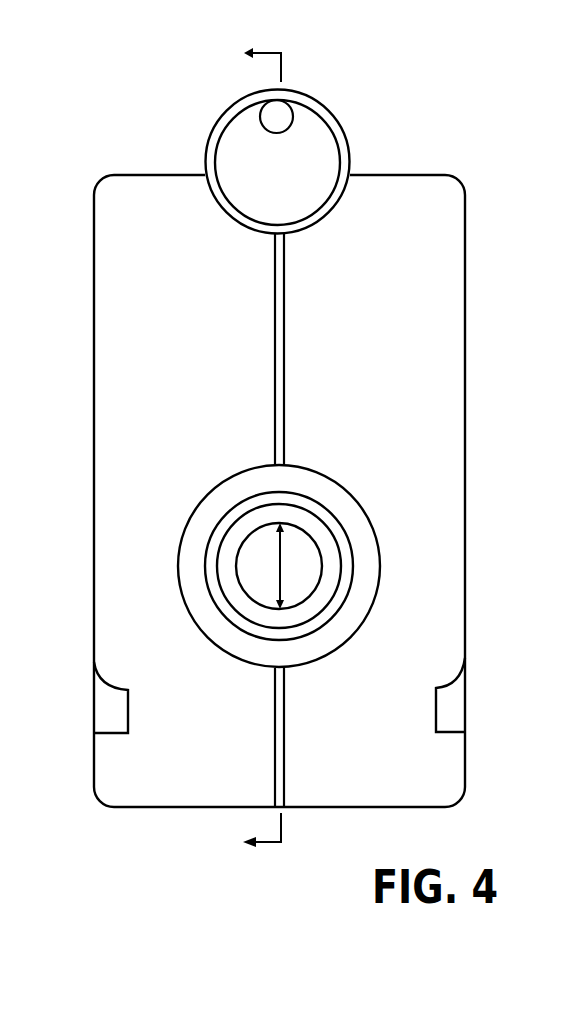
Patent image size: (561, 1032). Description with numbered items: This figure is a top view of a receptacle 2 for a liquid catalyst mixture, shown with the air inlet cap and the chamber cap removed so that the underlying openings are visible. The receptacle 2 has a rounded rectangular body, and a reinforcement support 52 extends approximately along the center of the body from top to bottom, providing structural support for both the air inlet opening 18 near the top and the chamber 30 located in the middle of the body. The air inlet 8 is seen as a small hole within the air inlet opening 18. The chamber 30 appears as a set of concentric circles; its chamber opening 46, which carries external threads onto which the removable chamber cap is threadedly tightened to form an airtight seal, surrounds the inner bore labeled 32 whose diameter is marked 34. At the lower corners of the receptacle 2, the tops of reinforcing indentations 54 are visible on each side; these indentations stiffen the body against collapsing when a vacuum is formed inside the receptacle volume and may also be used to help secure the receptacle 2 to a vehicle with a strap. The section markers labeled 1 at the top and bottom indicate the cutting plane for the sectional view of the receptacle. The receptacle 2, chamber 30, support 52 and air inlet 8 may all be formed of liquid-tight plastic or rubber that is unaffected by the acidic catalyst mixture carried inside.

The section line 1- 1 is at (255, 454).
The receptacle 2 is at (60, 196).
The air inlet 8 is at (285, 127).
The air inlet opening 18 is at (298, 186).
The chamber 30 is at (203, 508).
The bore 32 is at (271, 583).
The bore diameter 34 is at (291, 566).
The chamber opening 46 is at (257, 505).
The reinforcement support 52 is at (284, 365).
The reinforcing indentation 54 is at (113, 709).